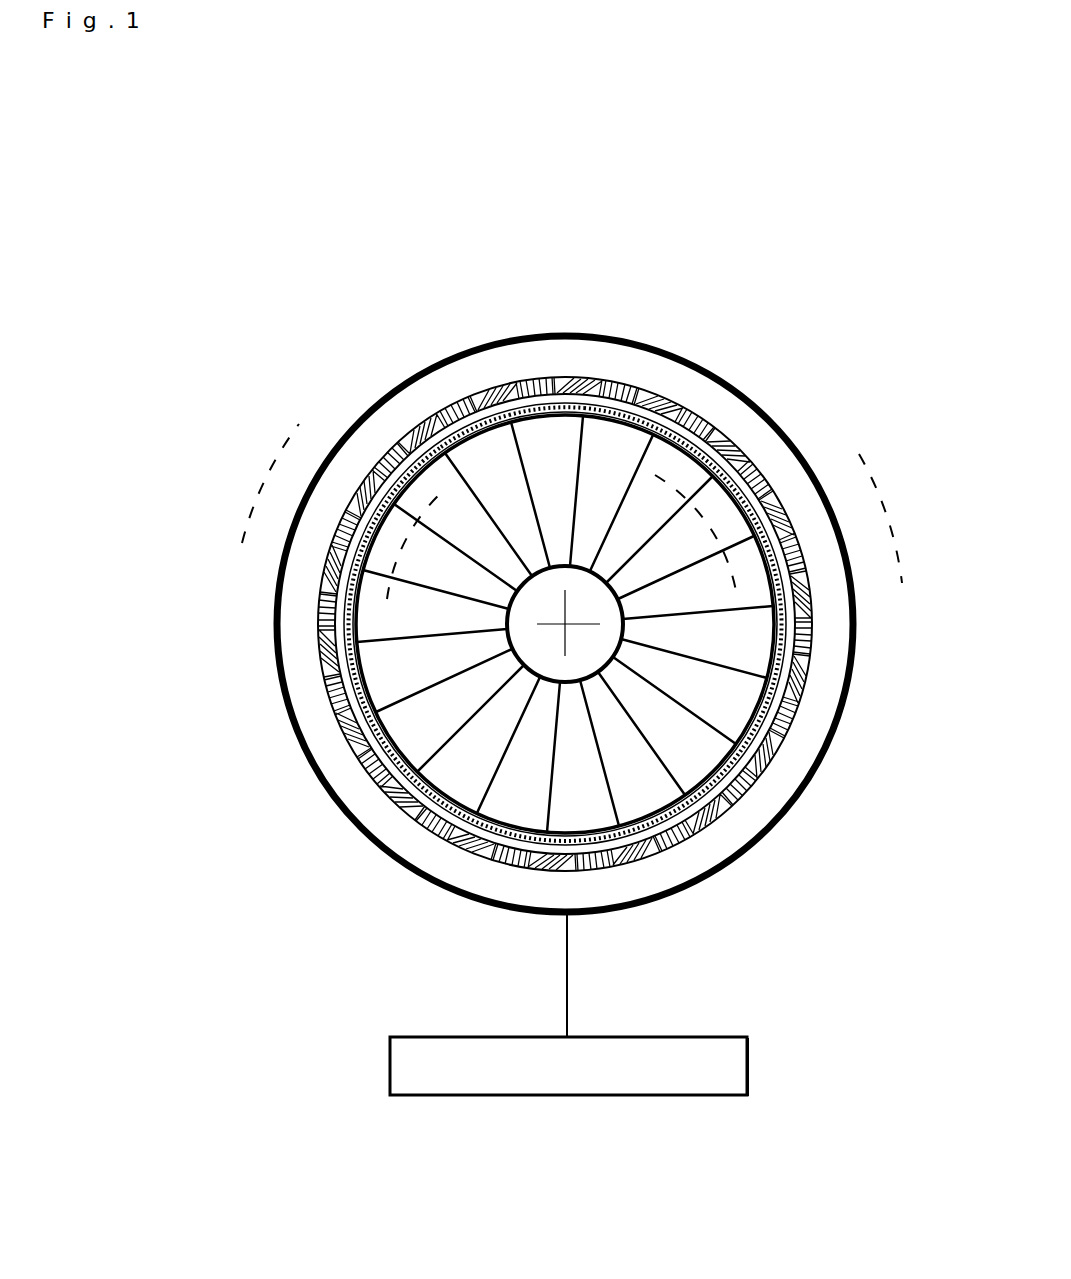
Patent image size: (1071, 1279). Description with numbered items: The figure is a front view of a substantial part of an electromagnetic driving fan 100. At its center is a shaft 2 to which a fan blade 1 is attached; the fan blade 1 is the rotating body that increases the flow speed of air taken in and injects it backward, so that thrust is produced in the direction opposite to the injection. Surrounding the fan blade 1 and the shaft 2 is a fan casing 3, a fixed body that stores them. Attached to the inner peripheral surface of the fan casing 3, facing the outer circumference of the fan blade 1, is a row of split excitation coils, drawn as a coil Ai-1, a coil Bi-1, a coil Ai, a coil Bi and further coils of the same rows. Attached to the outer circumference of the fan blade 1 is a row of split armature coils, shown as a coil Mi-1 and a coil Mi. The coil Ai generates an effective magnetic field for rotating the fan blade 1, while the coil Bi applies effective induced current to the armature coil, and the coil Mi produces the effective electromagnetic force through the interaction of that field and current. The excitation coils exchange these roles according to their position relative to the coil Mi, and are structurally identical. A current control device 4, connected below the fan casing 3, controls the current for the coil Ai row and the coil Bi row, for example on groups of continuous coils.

The electromagnetic driving fan 100 is at (605, 156).
The fan blade 1 is at (641, 792).
The shaft 2 is at (547, 645).
The fan casing 3 is at (830, 638).
The current control device 4 is at (517, 1045).
The coil A_i Ai is at (562, 380).
The coil B_i Bi is at (597, 387).
The coil A_i-1 Ai-1 is at (448, 408).
The coil B_i-1 Bi-1 is at (483, 393).
The coil M_i Mi is at (533, 380).
The coil M_i-1 Mi-1 is at (472, 430).